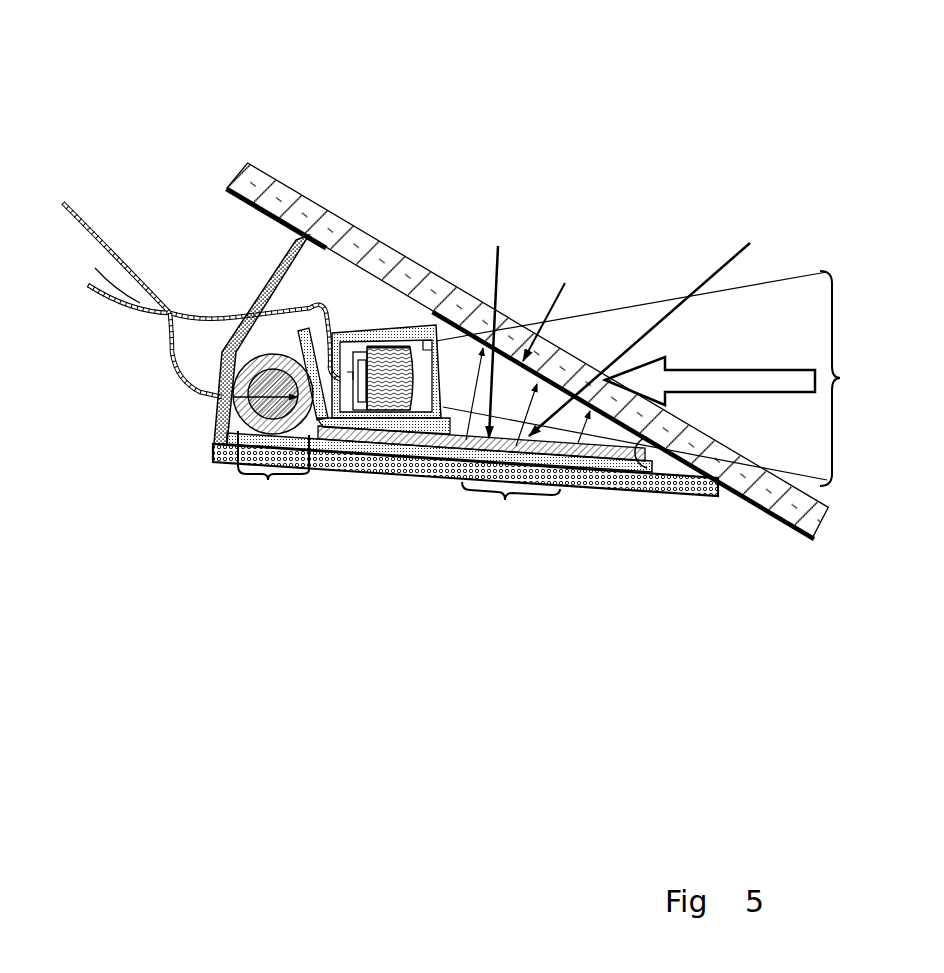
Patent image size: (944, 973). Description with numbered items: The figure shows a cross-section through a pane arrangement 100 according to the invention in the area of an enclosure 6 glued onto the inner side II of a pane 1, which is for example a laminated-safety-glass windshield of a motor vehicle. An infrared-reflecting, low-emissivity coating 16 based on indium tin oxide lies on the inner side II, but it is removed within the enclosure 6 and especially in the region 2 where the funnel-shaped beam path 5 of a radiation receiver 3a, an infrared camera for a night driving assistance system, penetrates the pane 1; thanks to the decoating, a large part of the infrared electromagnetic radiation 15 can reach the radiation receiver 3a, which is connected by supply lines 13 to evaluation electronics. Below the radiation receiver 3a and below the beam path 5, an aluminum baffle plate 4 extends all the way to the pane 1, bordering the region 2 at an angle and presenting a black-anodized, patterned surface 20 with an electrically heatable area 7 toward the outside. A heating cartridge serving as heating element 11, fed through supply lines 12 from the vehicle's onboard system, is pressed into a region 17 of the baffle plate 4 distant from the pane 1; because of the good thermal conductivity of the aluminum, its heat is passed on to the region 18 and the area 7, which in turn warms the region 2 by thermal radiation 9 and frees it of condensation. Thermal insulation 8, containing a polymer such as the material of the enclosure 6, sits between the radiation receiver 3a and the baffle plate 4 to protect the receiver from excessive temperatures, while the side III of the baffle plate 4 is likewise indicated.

The pane arrangement 100 is at (541, 162).
The pane 1 is at (253, 184).
The region 2 is at (551, 304).
The radiation receiver 3a is at (378, 317).
The baffle plate 4 is at (553, 454).
The beam path 5 is at (649, 378).
The enclosure 6 is at (274, 274).
The heatable area 7 is at (476, 443).
The thermal insulation 8 is at (329, 431).
The thermal radiation 9 is at (516, 446).
The heating element 11 is at (243, 410).
The supply line to the heating element 12 is at (171, 349).
The supply line to the radiation receiver 13 is at (193, 312).
The electromagnetic radiation 15 is at (742, 392).
The coating 16 is at (319, 237).
The first region of the baffle plate 17 is at (268, 480).
The second region of the baffle plate 18 is at (511, 521).
The surface of the baffle plate 20 is at (528, 325).
The inner side of the pane II is at (794, 530).
The side of the baffle plate III is at (654, 322).